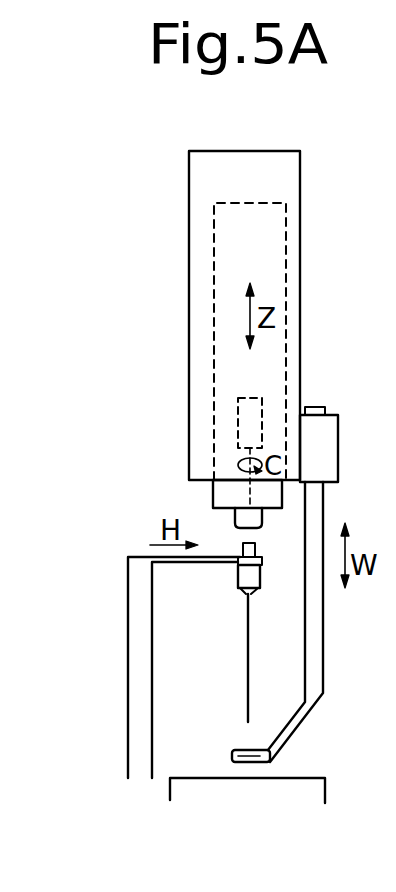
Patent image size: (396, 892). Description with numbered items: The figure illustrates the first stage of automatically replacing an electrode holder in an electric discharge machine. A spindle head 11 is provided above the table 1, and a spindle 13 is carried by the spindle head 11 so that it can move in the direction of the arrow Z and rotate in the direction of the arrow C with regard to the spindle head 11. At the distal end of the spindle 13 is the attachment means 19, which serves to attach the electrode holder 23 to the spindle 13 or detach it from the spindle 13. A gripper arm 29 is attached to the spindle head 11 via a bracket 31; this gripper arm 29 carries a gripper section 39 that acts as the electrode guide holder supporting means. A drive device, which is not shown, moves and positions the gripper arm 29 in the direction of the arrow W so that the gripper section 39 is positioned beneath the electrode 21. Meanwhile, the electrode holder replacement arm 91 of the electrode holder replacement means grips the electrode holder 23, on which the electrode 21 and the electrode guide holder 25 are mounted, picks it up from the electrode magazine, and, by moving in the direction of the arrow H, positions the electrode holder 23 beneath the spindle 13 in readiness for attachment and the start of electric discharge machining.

The table 1 is at (310, 778).
The spindle head 11 is at (189, 227).
The spindle 13 is at (213, 294).
The attachment means 19 is at (240, 522).
The electrode 21 is at (247, 670).
The electrode holder 23 is at (256, 556).
The electrode guide holder 25 is at (238, 580).
The gripper arm 29 is at (324, 648).
The bracket 31 is at (338, 446).
The gripper section 39 is at (232, 757).
The electrode holder replacement arm 91 is at (128, 633).